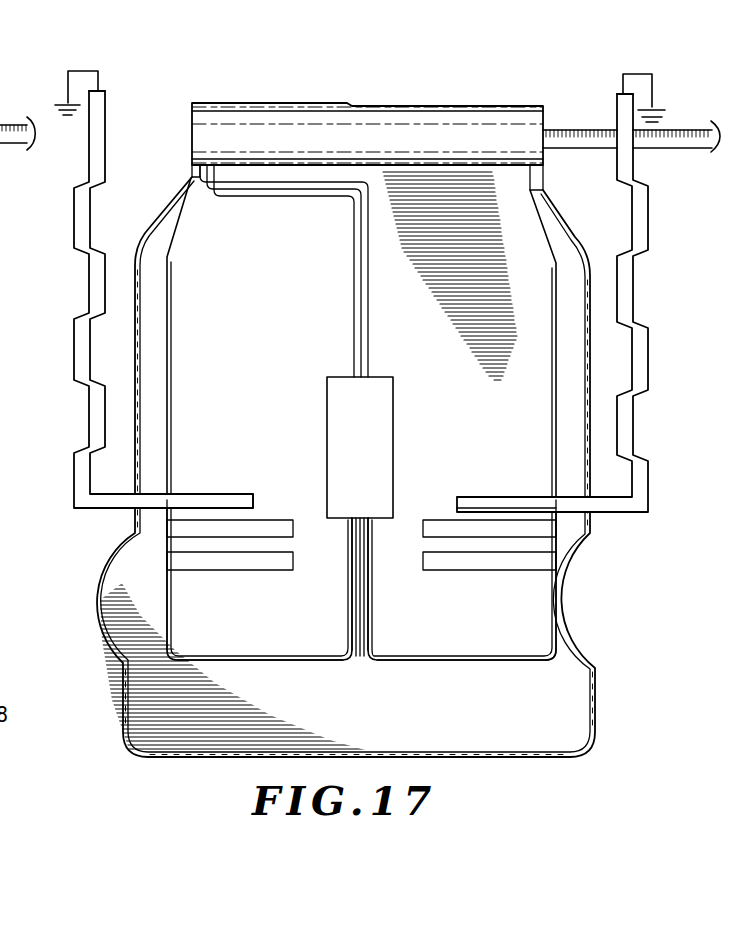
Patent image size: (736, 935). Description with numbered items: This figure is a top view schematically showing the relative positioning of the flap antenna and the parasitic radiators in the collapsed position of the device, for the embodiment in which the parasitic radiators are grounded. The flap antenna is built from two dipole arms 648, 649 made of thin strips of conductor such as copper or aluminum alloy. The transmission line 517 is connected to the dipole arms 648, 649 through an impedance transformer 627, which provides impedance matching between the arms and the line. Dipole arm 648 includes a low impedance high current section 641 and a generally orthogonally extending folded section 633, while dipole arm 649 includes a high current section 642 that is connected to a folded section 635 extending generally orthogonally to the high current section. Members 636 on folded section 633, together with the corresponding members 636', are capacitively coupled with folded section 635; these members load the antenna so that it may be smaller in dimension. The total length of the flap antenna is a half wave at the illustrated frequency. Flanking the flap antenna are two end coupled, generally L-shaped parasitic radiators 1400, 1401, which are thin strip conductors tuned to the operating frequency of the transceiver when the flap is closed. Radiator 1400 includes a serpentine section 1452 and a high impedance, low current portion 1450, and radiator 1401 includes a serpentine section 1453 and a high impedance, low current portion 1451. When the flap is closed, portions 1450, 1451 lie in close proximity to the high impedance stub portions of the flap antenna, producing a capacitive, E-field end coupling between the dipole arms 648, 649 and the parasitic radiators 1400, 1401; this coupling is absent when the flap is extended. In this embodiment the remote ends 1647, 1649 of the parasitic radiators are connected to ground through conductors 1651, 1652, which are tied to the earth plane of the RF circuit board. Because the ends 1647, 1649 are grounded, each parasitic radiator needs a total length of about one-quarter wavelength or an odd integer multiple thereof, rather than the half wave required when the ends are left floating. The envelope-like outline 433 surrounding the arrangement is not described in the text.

The conductor 1652 is at (98, 85).
The remote end of parasitic radiator 1649 is at (100, 91).
The serpentine section 1453 is at (106, 143).
The remote end of parasitic radiator 1647 is at (620, 93).
The conductor 1651 is at (653, 90).
The transmission line 517 is at (653, 150).
The parasitic radiator 1400 is at (595, 303).
The impedance transformer 627 is at (304, 305).
The envelope wall 433 is at (168, 354).
The serpentine section 1452 is at (643, 353).
The parasitic radiator 1401 is at (134, 299).
The high impedance, low current portion 1450 is at (498, 497).
The capacitively coupled member 636' is at (255, 558).
The capacitively coupled members 636 is at (468, 558).
The folded section 633 is at (553, 615).
The folded section 635 is at (167, 597).
The high current section 641 is at (213, 657).
The high current section 642 is at (413, 657).
The high impedance, low current portion 1451 is at (212, 505).
The dipole arm 649 is at (248, 674).
The dipole arm 648 is at (552, 665).